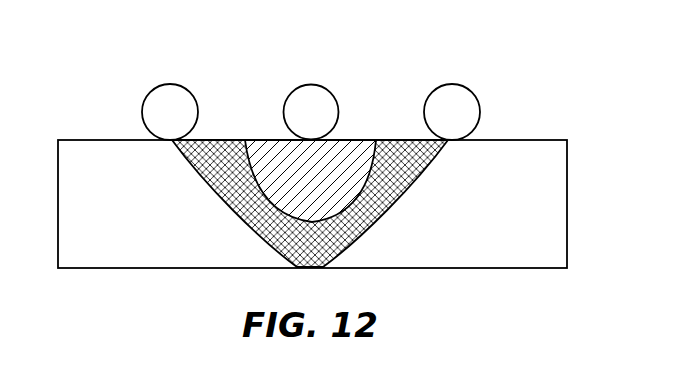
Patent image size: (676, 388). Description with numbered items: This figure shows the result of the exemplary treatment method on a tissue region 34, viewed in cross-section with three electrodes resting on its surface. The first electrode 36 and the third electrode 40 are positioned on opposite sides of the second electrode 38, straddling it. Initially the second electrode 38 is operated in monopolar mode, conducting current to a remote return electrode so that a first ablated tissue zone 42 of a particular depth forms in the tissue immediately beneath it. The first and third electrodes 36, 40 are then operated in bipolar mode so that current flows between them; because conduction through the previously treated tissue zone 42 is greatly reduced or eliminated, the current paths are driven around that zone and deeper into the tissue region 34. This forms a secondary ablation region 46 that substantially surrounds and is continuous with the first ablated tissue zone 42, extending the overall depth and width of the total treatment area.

The tissue region 34 is at (543, 252).
The first electrode 36 is at (158, 123).
The second electrode 38 is at (299, 123).
The third electrode 40 is at (440, 123).
The first ablated tissue zone 42 is at (358, 155).
The secondary ablation region 46 is at (405, 207).